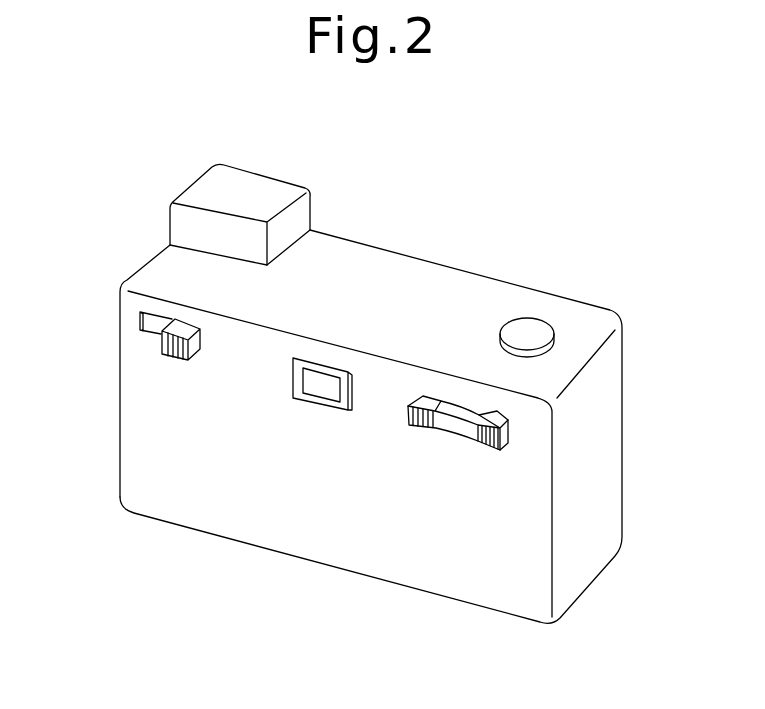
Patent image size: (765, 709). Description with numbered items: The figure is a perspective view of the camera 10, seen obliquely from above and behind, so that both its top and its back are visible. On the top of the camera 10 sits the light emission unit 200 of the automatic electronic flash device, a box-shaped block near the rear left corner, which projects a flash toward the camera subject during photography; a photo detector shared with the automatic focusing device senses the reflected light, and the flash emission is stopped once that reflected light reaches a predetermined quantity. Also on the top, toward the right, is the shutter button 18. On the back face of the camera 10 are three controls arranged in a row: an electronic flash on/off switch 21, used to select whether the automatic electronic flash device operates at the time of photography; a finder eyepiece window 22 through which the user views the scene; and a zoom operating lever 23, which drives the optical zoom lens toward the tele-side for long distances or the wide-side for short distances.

The camera 10 is at (468, 178).
The light emission unit 200 is at (256, 193).
The shutter button 18 is at (533, 318).
The electronic flash on/off switch 21 is at (182, 325).
The finder eyepiece window 22 is at (322, 365).
The zoom operating lever 23 is at (443, 402).